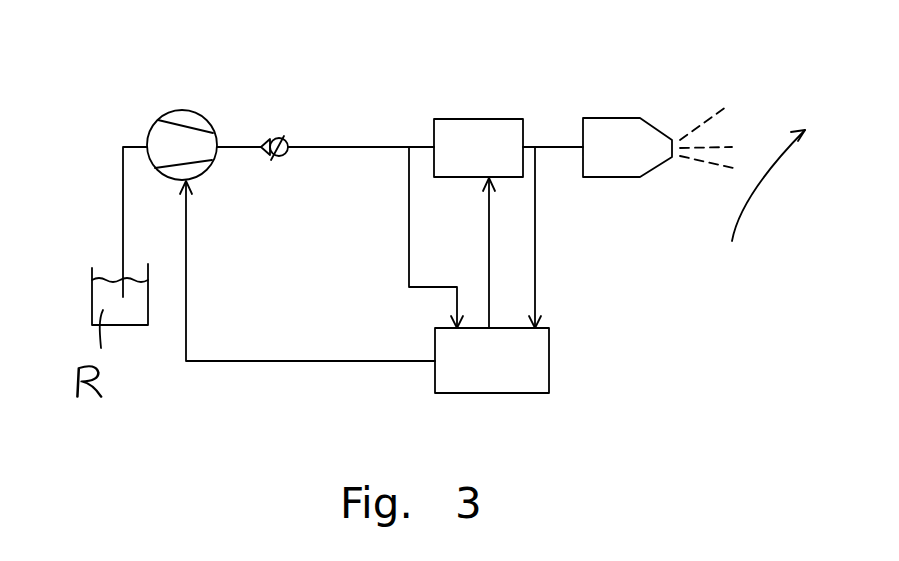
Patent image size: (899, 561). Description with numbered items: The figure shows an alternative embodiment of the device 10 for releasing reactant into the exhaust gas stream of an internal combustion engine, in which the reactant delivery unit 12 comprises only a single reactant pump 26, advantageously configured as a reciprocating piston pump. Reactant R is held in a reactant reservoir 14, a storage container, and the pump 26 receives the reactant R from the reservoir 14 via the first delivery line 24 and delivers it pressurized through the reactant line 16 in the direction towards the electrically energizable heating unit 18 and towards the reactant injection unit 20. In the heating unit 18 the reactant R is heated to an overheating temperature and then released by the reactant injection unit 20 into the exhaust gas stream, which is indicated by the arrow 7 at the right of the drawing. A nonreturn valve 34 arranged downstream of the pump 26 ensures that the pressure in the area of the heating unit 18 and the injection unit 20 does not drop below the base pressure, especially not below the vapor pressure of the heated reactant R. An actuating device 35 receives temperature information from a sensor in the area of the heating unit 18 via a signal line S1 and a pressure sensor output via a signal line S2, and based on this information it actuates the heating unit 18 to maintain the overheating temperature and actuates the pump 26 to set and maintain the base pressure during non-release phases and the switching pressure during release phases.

The device for releasing reactant 10 is at (212, 432).
The reactant delivery unit 12 is at (128, 102).
The reactant reservoir 14 is at (92, 292).
The reactant line 16 is at (397, 112).
The heating unit 18 is at (512, 90).
The reactant injection unit 20 is at (633, 90).
The first delivery line 24 is at (121, 168).
The reactant pump 26 is at (227, 90).
The nonreturn valve 34 is at (273, 190).
The actuating device 35 is at (583, 372).
The rotation direction 7 is at (780, 217).
The signal line S1 is at (568, 283).
The signal line S2 is at (409, 255).
The reactant R is at (716, 121).